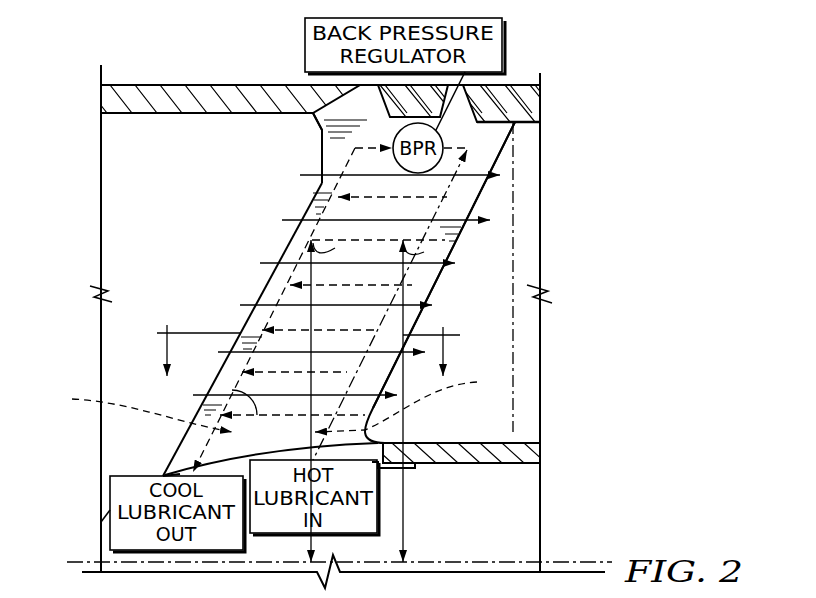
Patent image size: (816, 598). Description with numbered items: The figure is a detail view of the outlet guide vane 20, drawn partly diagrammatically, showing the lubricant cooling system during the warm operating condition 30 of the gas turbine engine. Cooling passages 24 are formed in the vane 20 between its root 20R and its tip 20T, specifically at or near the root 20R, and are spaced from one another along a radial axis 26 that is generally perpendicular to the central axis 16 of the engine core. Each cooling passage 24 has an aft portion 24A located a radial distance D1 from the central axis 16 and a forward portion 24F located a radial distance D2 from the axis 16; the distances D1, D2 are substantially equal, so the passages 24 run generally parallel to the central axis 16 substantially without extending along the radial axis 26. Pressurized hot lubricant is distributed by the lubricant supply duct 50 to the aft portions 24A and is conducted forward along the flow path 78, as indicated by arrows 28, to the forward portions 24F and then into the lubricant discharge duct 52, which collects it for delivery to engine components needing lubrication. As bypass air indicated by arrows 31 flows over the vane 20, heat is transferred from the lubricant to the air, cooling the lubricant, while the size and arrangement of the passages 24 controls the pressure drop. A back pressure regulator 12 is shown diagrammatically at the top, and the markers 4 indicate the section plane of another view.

The back pressure regulator 12 is at (506, 41).
The central axis 16 is at (457, 560).
The outlet guide vane 20 is at (509, 146).
The tip 20T is at (478, 136).
The root 20R is at (160, 474).
The cooling passages 24 is at (358, 224).
The forward portion 24F is at (332, 241).
The aft portion 24A is at (424, 252).
The radial axis 26 is at (515, 232).
The arrows 28 is at (272, 374).
The operating condition 30 is at (300, 156).
The arrows 31 is at (428, 308).
The thickness dimension 4 is at (308, 339).
The lubricant supply duct 50 is at (409, 403).
The lubricant discharge duct 52 is at (138, 411).
The flow path 78 is at (412, 202).
The radial distance D1 is at (405, 432).
The radial distance D2 is at (310, 302).